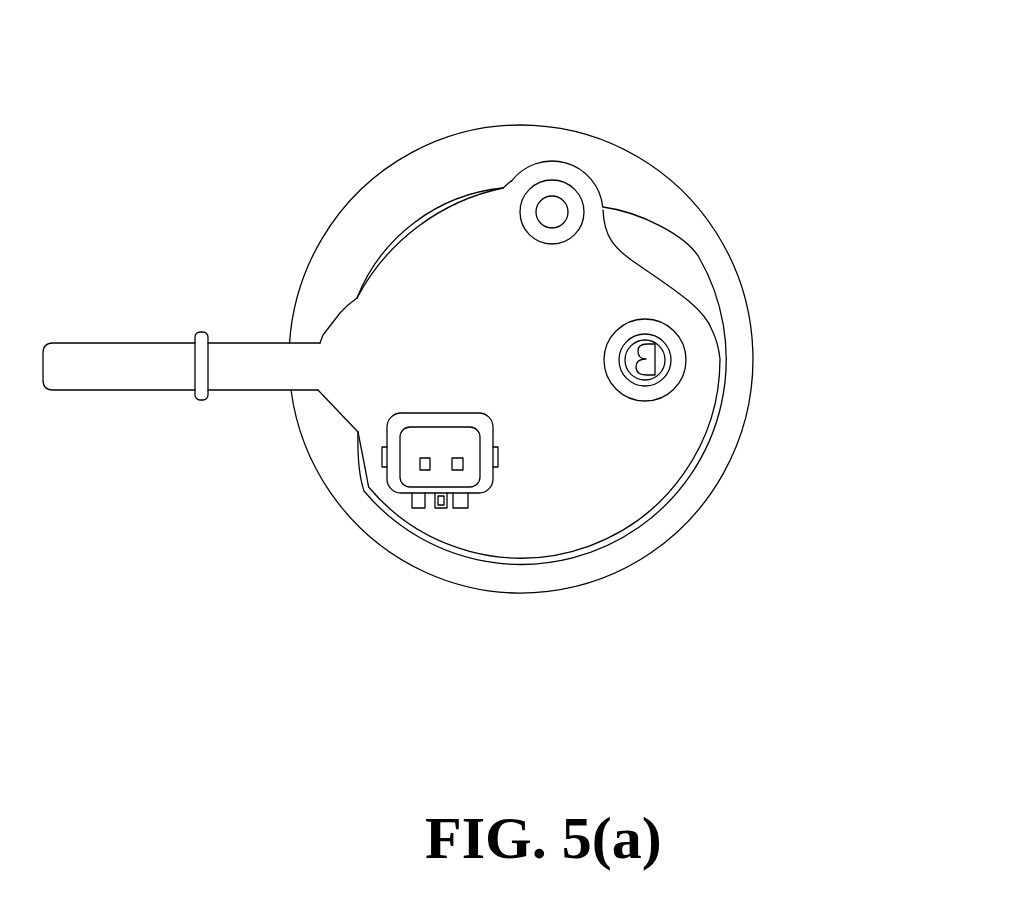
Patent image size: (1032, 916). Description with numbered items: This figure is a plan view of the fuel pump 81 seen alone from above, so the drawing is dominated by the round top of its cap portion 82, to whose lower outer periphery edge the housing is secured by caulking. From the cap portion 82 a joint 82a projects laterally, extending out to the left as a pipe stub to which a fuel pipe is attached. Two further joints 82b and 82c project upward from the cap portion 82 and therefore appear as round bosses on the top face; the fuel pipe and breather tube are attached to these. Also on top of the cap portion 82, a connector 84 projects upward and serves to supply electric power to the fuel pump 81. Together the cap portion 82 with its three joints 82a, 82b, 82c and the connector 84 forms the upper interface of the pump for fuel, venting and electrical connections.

The fuel pump 81 is at (711, 116).
The cap portion 82 is at (618, 482).
The joint 82a is at (127, 390).
The joint 82b is at (562, 197).
The joint 82c is at (683, 372).
The connector 84 is at (398, 482).